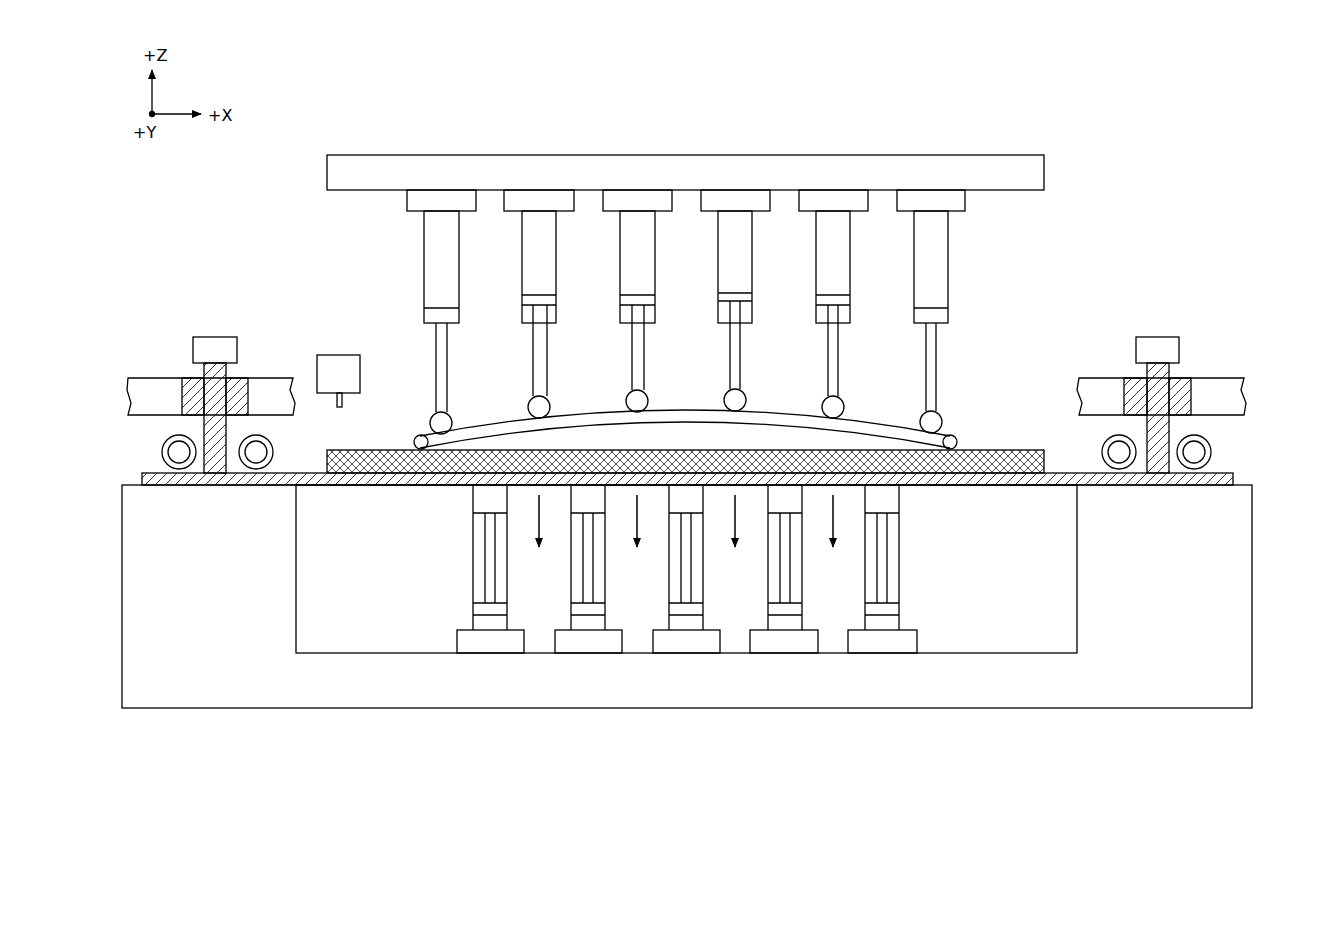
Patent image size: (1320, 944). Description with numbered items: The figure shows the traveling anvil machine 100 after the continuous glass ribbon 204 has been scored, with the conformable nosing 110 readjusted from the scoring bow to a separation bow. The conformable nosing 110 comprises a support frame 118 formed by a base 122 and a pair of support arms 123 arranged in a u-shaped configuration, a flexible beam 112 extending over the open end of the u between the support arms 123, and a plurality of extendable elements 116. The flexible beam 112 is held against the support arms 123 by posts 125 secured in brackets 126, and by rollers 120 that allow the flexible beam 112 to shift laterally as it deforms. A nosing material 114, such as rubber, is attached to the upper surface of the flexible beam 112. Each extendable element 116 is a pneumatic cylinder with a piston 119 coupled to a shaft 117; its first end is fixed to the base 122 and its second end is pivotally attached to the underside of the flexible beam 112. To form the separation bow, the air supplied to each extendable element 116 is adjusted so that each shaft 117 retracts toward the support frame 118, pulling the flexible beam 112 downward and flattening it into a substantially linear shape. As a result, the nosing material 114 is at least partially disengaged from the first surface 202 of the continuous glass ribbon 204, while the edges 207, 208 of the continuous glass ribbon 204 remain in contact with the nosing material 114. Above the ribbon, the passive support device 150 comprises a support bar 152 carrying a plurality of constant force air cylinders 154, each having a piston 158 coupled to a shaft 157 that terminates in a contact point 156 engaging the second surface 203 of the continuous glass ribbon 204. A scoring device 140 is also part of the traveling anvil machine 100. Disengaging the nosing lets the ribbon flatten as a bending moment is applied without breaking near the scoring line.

The traveling anvil machine 100 is at (1182, 148).
The conformable nosing 110 is at (1226, 313).
The flexible beam 112 is at (344, 486).
The nosing material 114 is at (374, 450).
The extendable element 116 is at (472, 558).
The shaft 117 is at (890, 532).
The support frame 118 is at (112, 601).
The piston 119 is at (893, 600).
The roller 120 is at (160, 449).
The base 122 is at (581, 708).
The support arm 123 is at (120, 531).
The post 125 is at (216, 337).
The bracket 126 is at (150, 378).
The scoring device 140 is at (336, 355).
The passive support device 150 is at (964, 133).
The support bar 152 is at (363, 155).
The constant force air cylinder 154 is at (424, 244).
The contact point 156 is at (452, 418).
The shaft 157 is at (435, 350).
The piston 158 is at (424, 278).
The first surface 202 is at (788, 430).
The second surface 203 is at (605, 412).
The continuous glass ribbon 204 is at (686, 406).
The edge 207 is at (955, 436).
The edge 208 is at (416, 436).